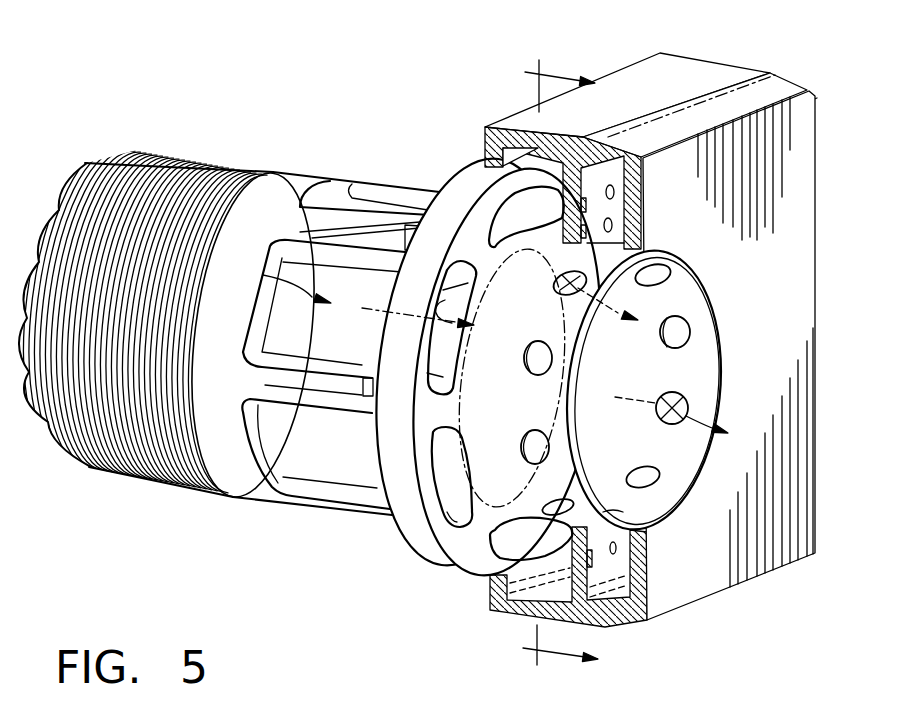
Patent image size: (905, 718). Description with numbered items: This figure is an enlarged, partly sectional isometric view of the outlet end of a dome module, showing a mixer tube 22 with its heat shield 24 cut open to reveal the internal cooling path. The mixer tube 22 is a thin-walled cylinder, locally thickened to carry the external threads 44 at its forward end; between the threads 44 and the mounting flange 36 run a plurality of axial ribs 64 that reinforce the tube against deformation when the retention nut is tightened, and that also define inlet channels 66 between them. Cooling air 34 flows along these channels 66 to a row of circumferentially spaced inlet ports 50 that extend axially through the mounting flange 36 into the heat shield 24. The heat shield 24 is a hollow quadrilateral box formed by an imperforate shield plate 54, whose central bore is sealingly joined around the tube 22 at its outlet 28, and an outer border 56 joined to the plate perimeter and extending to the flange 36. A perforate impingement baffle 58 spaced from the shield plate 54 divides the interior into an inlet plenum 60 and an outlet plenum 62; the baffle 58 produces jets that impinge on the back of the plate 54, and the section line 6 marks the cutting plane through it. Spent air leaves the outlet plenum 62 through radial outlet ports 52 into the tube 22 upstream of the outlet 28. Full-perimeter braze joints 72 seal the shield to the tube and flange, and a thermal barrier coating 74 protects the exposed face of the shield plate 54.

The section line 6- 6 is at (560, 367).
The mixer tube 22 is at (290, 186).
The heat shield 24 is at (801, 143).
The outlet 28 is at (700, 376).
The cooling air 34 is at (291, 296).
The mounting flange 36 is at (401, 456).
The external threads 44 is at (170, 166).
The inlet ports 50 is at (458, 514).
The outlet ports 52 is at (650, 487).
The shield plate 54 is at (646, 247).
The border 56 is at (662, 99).
The impingement baffle 58 is at (560, 278).
The inlet plenum 60 is at (512, 150).
The outlet plenum 62 is at (612, 210).
The axial ribs 64 is at (420, 223).
The inlet channels 66 is at (288, 450).
The braze joints 72 is at (478, 170).
The thermal barrier coating 74 is at (795, 301).